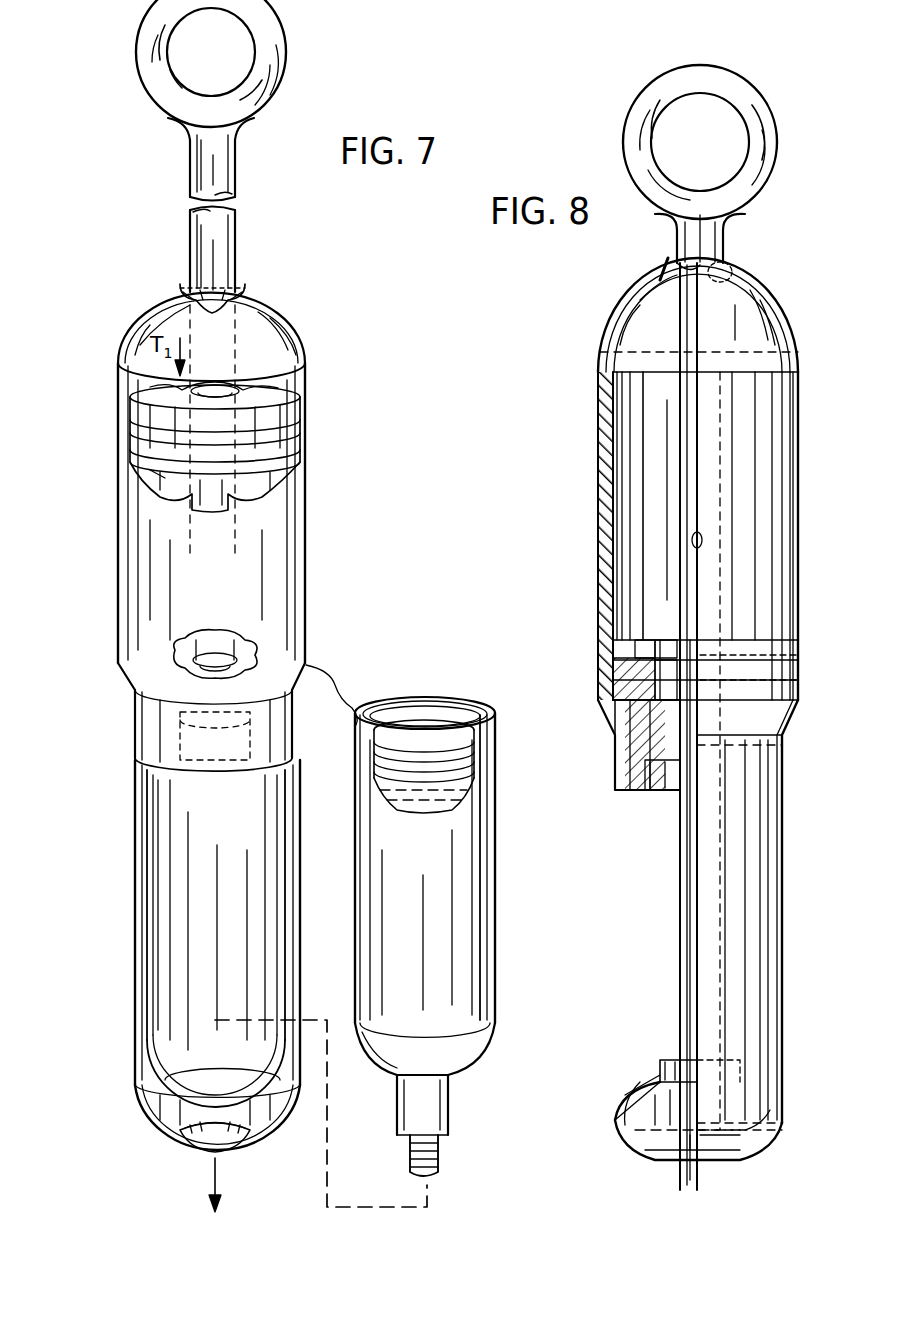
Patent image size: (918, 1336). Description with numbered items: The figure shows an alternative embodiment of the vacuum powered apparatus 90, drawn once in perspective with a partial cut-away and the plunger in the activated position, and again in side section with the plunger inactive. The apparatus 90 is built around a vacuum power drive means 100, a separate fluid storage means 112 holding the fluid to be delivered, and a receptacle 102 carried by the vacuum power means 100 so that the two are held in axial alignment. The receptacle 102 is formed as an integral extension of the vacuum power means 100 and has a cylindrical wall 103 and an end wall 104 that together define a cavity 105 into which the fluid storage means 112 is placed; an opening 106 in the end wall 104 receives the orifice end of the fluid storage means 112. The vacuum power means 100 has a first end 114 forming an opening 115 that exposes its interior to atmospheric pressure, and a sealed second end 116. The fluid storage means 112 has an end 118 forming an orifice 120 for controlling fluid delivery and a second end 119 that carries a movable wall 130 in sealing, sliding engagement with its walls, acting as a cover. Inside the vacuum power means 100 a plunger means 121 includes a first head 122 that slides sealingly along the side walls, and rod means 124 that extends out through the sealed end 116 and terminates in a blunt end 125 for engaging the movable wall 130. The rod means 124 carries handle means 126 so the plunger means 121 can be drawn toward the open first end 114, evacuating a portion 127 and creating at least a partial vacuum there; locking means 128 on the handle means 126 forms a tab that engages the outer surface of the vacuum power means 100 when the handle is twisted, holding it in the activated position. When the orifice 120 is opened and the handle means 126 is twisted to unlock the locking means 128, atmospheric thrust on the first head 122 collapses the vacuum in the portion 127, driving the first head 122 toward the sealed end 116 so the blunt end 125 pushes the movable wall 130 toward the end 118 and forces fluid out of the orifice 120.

In FIG. 7, the vacuum powered apparatus 90 is at (340, 367).
In FIG. 8, the vacuum powered apparatus 90 is at (800, 392).
In FIG. 7, the vacuum power drive means 100 is at (306, 528).
In FIG. 8, the vacuum power drive means 100 is at (799, 512).
In FIG. 7, the receptacle 102 is at (157, 846).
In FIG. 7, the cylindrical wall 103 is at (137, 817).
In FIG. 8, the cylindrical wall 103 is at (783, 888).
In FIG. 7, the end wall 104 is at (170, 1135).
In FIG. 7, the cavity 105 is at (175, 973).
In FIG. 7, the opening 106 is at (230, 1140).
In FIG. 7, the fluid storage means 112 is at (492, 835).
In FIG. 8, the fluid storage means 112 is at (690, 790).
In FIG. 7, the first end 114 is at (278, 325).
In FIG. 8, the first end 114 is at (775, 300).
In FIG. 7, the opening 115 is at (190, 290).
In FIG. 8, the opening 115 is at (735, 272).
In FIG. 7, the second end 116 is at (240, 654).
In FIG. 7, the end 118 is at (448, 1138).
In FIG. 7, the second end 119 is at (484, 710).
In FIG. 8, the second end 119 is at (615, 695).
In FIG. 7, the orifice 120 is at (430, 1178).
In FIG. 7, the plunger means 121 is at (275, 472).
In FIG. 7, the first head 122 is at (300, 428).
In FIG. 8, the first head 122 is at (635, 650).
In FIG. 7, the rod means 124 is at (205, 495).
In FIG. 8, the rod means 124 is at (678, 884).
In FIG. 7, the blunt end 125 is at (145, 749).
In FIG. 8, the blunt end 125 is at (665, 1060).
In FIG. 7, the handle means 126 is at (283, 8).
In FIG. 8, the handle means 126 is at (640, 100).
In FIG. 7, the portion 127 is at (165, 478).
In FIG. 7, the locking means 128 is at (247, 290).
In FIG. 8, the locking means 128 is at (692, 540).
In FIG. 7, the movable wall 130 is at (422, 712).